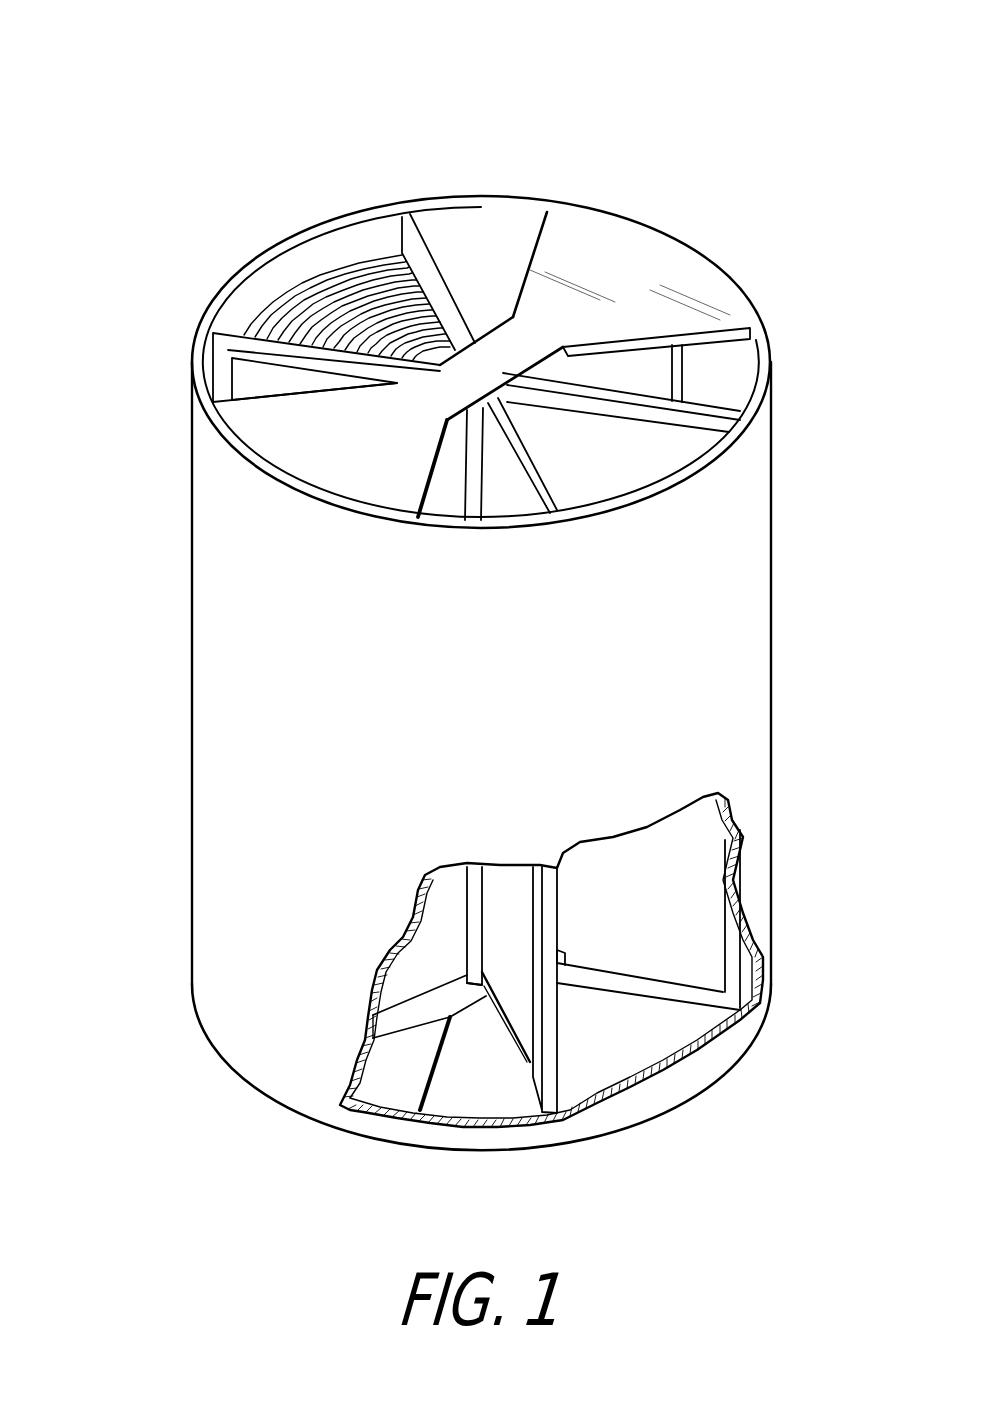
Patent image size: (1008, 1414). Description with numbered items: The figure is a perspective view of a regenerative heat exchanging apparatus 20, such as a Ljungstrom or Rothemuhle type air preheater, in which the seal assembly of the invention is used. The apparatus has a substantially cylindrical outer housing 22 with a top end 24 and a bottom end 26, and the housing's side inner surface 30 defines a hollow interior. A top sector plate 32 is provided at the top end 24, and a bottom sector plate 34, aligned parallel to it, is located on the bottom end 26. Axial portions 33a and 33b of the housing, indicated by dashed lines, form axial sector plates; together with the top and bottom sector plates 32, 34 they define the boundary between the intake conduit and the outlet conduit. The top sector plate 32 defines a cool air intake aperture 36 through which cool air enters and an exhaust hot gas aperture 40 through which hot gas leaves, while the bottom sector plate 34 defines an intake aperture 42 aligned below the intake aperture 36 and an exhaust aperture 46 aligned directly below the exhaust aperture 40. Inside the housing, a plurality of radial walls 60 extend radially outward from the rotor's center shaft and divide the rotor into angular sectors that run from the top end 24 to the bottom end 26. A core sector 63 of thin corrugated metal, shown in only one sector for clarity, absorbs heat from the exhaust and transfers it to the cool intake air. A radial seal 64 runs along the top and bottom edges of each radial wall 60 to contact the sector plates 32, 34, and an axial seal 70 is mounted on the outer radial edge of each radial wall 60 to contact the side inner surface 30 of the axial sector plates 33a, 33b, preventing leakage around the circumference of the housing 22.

The regenerative heat exchanging apparatus 20 is at (481, 617).
The outer housing 22 is at (120, 832).
The top end 24 is at (192, 378).
The bottom end 26 is at (190, 1112).
The side inner surface 30 is at (462, 276).
The top sector plate 32 is at (260, 440).
The axial portion (axial sector plate) 33a is at (236, 689).
The axial portion (axial sector plate) 33b is at (722, 260).
The bottom sector plate 34 is at (402, 1098).
The intake or cool air aperture 36 is at (545, 240).
The exhaust hot gas aperture 40 is at (563, 473).
The intake aperture 42 is at (197, 1180).
The exhaust aperture 46 is at (440, 1073).
The radial walls 60 is at (643, 368).
The core sector 63 is at (342, 272).
The radial seal 64 is at (407, 213).
The axial seal 70 is at (223, 375).